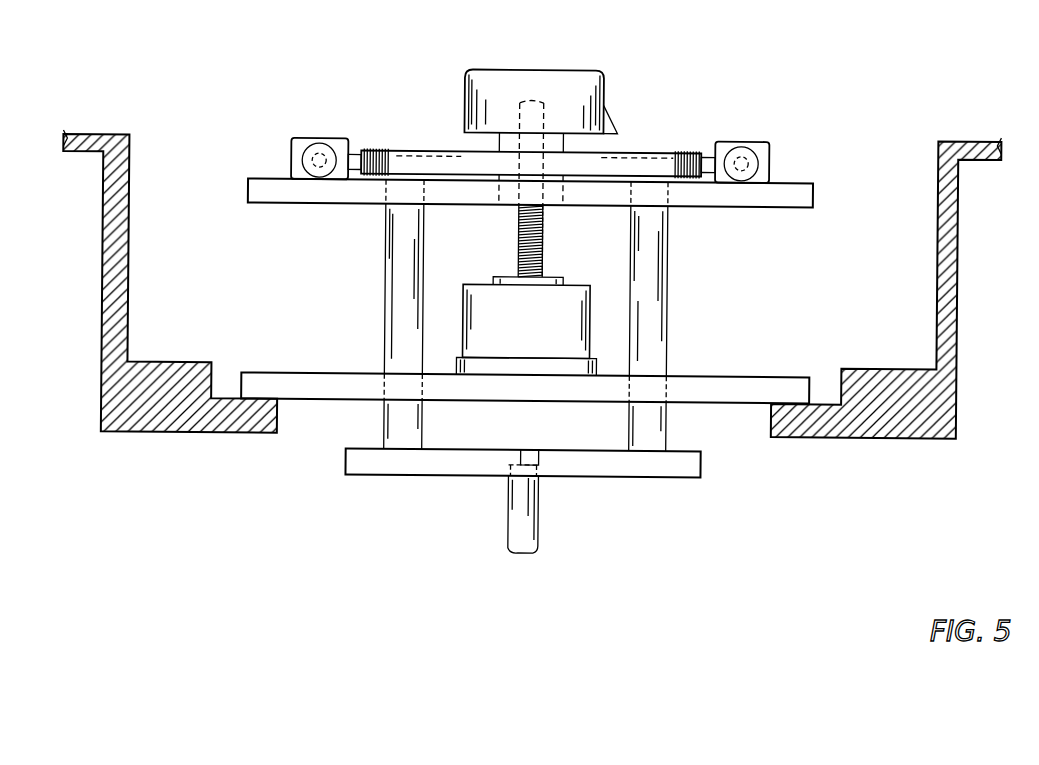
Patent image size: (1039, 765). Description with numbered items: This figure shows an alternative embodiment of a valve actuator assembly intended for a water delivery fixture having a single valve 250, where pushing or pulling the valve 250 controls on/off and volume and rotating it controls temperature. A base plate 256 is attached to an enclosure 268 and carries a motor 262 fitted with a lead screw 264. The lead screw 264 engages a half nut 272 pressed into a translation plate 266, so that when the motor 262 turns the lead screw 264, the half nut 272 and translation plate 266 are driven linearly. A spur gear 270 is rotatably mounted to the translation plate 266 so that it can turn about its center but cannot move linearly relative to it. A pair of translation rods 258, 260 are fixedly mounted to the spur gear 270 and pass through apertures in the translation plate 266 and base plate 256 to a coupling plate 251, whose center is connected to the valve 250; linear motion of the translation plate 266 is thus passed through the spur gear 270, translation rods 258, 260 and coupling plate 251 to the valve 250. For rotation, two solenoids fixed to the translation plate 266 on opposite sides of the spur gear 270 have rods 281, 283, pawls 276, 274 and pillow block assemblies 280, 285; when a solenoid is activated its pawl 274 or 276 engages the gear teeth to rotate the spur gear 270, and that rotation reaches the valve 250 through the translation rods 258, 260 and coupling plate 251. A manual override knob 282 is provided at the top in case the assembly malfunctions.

The valve 250 is at (535, 519).
The coupling plate 251 is at (625, 478).
The base plate 256 is at (330, 395).
The translation rod 258 is at (408, 275).
The translation rod 260 is at (655, 246).
The motor 262 is at (556, 327).
The lead screw 264 is at (521, 247).
The translation plate 266 is at (300, 196).
The enclosure 268 is at (170, 436).
The spur gear 270 is at (605, 163).
The half nut 272 is at (514, 203).
The pawl 274 is at (355, 151).
The pawl 276 is at (708, 155).
The pillow block assembly 280 is at (745, 142).
The rod 281 is at (742, 166).
The manual override knob 282 is at (509, 79).
The rod 283 is at (314, 163).
The pillow block assembly 285 is at (303, 142).